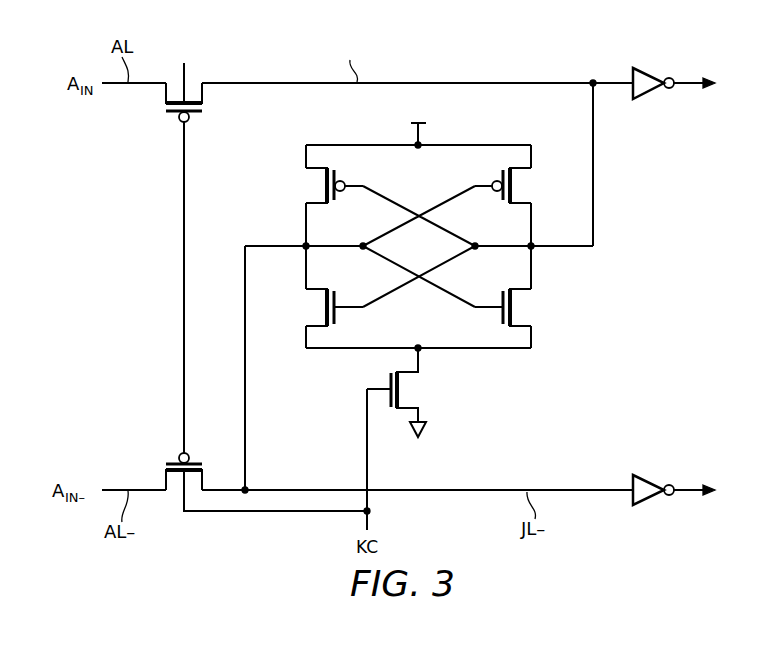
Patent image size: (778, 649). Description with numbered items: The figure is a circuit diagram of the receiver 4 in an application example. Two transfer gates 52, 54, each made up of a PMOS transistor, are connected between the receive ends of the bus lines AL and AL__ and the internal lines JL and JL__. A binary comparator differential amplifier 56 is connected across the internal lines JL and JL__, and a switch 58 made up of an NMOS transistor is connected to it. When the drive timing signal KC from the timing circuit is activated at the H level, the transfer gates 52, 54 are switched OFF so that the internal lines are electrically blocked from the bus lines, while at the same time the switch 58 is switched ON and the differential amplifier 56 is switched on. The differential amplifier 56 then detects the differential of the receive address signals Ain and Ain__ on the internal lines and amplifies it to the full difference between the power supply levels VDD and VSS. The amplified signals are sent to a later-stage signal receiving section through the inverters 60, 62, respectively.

The receiver 4 is at (484, 64).
The transfer gate 52 is at (174, 121).
The transfer gate 54 is at (176, 455).
The binary comparator differential amplifier 56 is at (592, 293).
The switch 58 is at (388, 381).
The inverter 60 is at (650, 73).
The inverter 62 is at (650, 500).